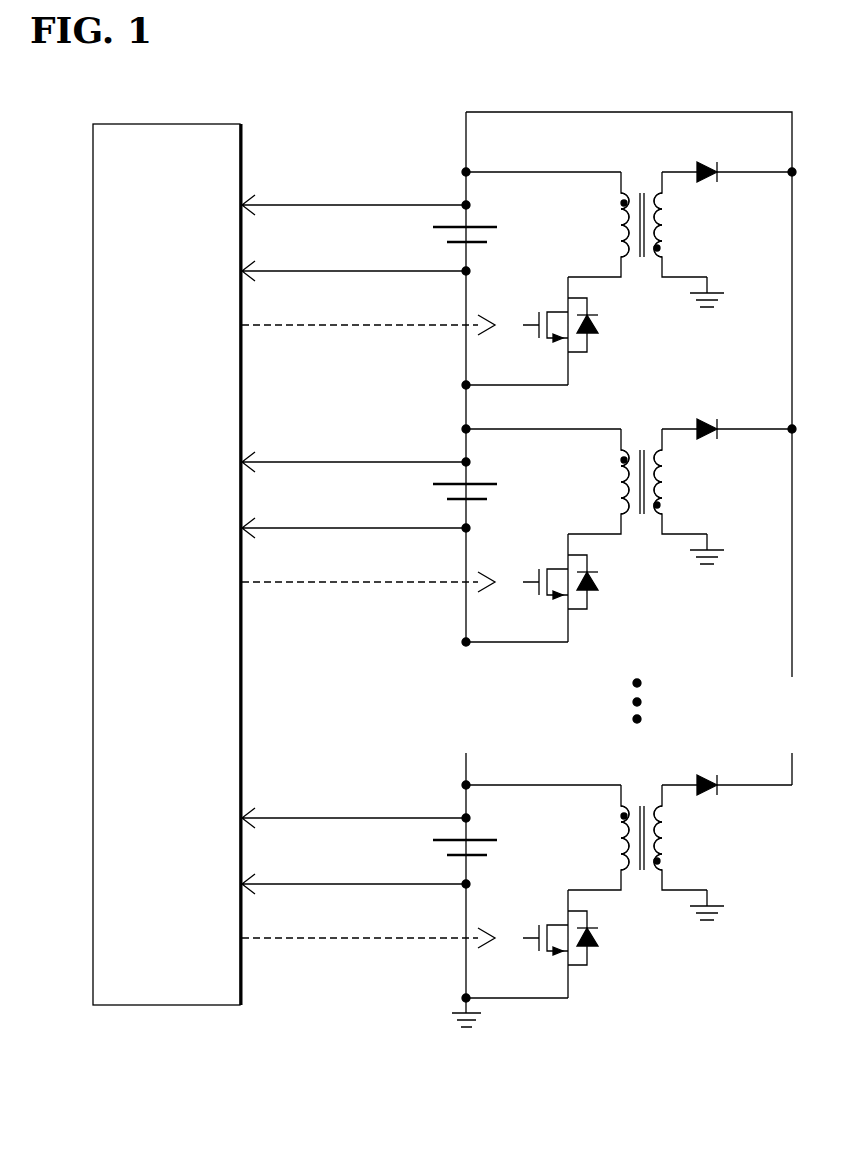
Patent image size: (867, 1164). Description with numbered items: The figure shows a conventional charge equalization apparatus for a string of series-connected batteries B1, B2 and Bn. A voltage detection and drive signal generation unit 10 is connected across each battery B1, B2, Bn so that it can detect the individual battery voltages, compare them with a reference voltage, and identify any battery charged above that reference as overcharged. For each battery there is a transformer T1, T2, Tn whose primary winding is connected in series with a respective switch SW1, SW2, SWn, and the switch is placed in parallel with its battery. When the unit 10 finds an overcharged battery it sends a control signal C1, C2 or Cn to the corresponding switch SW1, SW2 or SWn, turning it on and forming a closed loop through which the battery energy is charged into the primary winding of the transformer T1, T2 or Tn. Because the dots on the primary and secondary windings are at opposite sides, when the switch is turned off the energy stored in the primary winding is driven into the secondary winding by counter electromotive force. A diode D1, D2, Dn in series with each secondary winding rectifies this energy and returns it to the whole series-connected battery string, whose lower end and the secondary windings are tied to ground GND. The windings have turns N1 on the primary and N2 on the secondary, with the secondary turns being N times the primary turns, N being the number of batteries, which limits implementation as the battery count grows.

The voltage detection and drive signal generation unit 10 is at (243, 143).
The battery B1 is at (390, 238).
The battery B2 is at (390, 495).
The battery Bn is at (390, 851).
The control signal C1 is at (368, 336).
The control signal C2 is at (368, 593).
The control signal Cn is at (368, 949).
The diode D1 is at (711, 188).
The diode D2 is at (711, 445).
The diode Dn is at (711, 801).
The transformer T1 is at (637, 224).
The transformer T2 is at (637, 481).
The transformer Tn is at (637, 837).
The switch SW1 is at (589, 331).
The switch SW2 is at (589, 588).
The switch SWn is at (589, 944).
The number of turns in the primary winding N1 is at (614, 507).
The number of turns in the secondary winding N2 is at (668, 507).
The ground GND is at (608, 667).